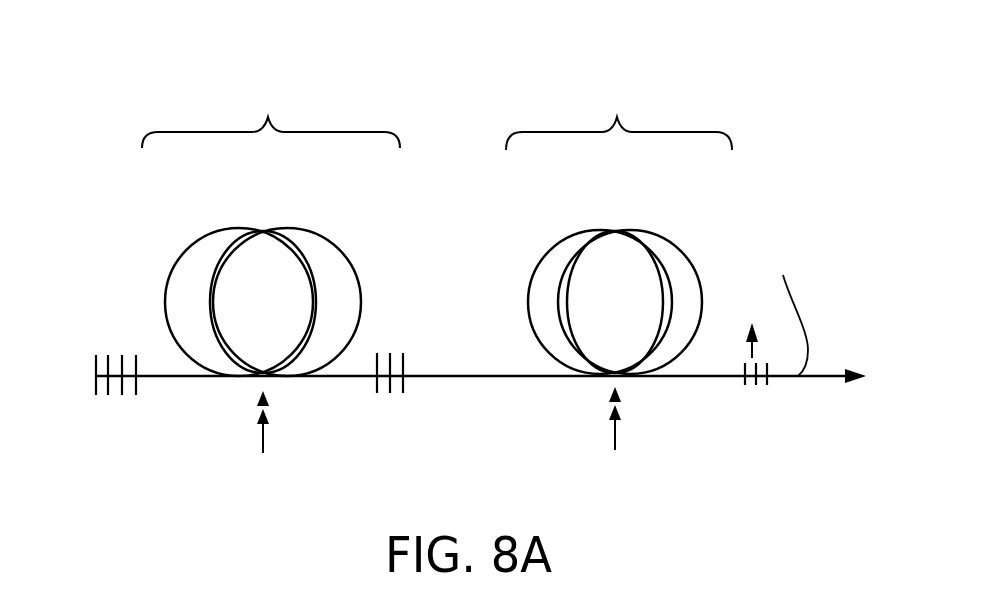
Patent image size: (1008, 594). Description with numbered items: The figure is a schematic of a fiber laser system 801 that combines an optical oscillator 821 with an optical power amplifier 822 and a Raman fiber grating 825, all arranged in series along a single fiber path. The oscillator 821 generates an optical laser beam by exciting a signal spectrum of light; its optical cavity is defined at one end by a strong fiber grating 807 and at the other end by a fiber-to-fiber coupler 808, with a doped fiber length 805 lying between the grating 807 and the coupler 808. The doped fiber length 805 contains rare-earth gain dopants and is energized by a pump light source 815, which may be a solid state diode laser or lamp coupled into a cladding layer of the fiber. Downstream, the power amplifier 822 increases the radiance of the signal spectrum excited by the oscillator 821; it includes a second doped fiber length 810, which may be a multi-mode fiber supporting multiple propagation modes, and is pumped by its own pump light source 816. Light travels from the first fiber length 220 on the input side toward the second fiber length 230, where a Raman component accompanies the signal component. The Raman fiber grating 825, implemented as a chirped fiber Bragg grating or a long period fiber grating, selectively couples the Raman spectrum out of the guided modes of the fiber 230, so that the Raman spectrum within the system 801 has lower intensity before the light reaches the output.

The fiber laser system 801 is at (100, 112).
The first fiber length 220 is at (176, 376).
The second fiber length 230 is at (785, 312).
The doped fiber length 805 is at (290, 214).
The doped fiber length 810 is at (632, 212).
The strong fiber grating 807 is at (137, 431).
The fiber-to-fiber coupler 808 is at (407, 430).
The Raman fiber grating 825 is at (778, 420).
The pump light source 815 is at (282, 514).
The pump light source 816 is at (635, 511).
The optical oscillator 821 is at (271, 116).
The optical power amplifier 822 is at (619, 116).